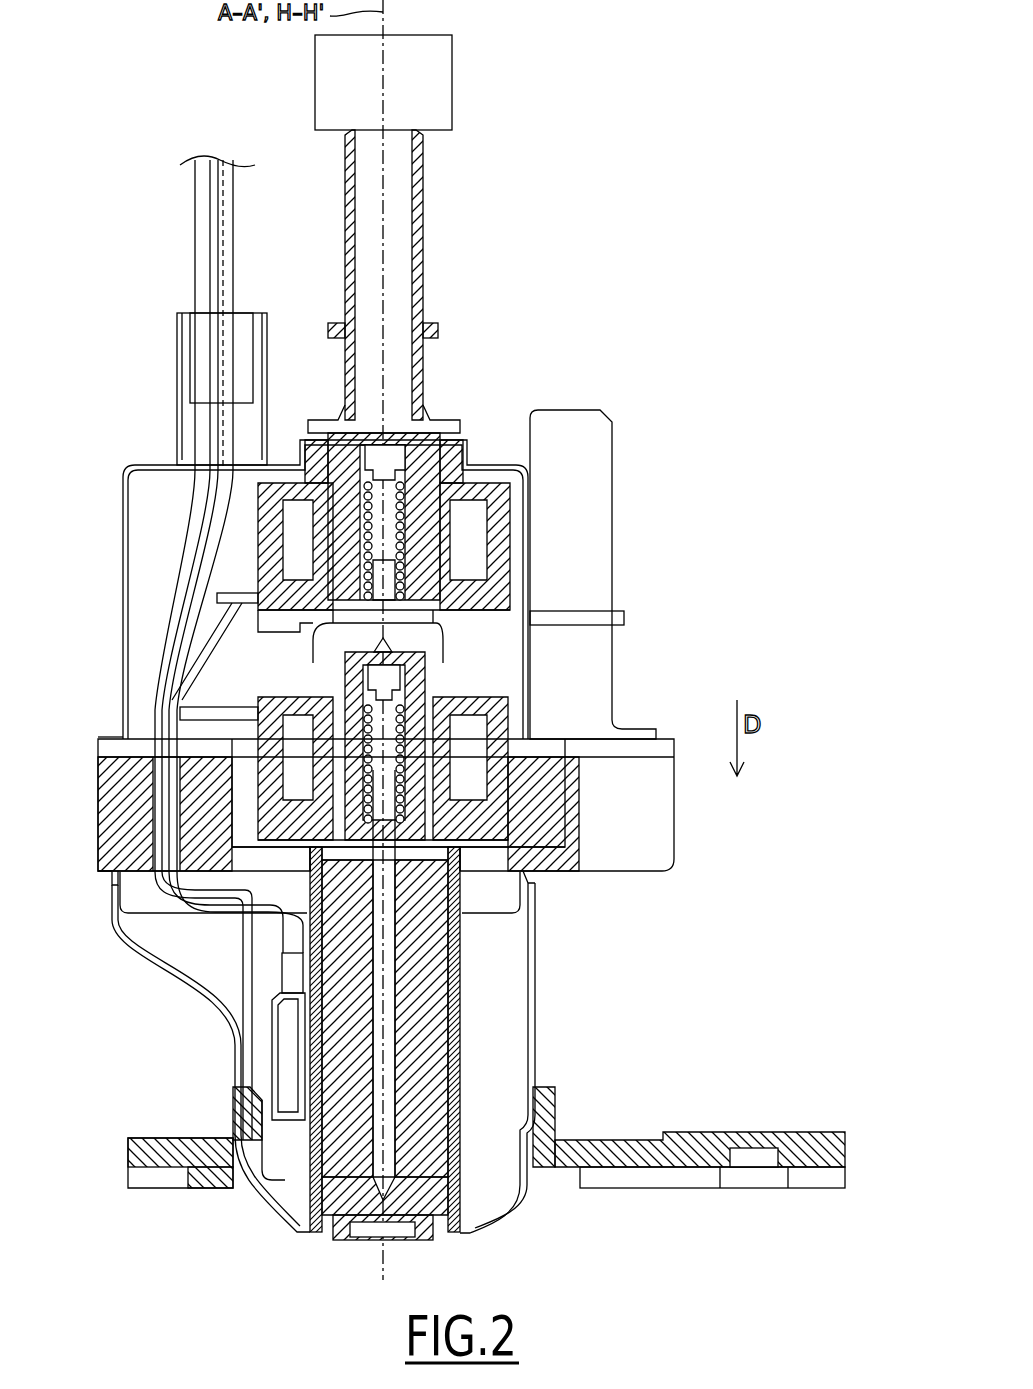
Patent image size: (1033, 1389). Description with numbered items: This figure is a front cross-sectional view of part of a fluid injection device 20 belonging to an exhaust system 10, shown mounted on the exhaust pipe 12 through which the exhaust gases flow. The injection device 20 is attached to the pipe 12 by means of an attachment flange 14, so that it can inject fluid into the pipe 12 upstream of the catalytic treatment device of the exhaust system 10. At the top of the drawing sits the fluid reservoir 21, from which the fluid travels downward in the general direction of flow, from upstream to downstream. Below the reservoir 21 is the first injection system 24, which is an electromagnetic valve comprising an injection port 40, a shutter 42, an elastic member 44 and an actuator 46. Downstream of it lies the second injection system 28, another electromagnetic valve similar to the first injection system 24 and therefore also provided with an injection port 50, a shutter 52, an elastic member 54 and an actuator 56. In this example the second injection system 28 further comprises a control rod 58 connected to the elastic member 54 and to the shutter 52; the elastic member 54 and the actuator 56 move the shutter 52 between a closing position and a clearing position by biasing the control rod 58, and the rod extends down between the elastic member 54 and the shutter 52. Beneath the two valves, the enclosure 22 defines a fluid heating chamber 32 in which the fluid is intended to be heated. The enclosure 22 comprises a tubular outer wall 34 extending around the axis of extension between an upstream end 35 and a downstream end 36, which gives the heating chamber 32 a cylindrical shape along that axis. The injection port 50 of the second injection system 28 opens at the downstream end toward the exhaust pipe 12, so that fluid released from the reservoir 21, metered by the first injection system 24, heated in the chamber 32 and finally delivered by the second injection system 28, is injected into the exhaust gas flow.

The exhaust system 10 is at (679, 283).
The exhaust pipe 12 is at (690, 1153).
The attachment flange 14 is at (578, 1140).
The fluid injection device 20 is at (497, 443).
The fluid reservoir 21 is at (453, 97).
The enclosure 22 is at (475, 1027).
The first injection system 24 is at (345, 430).
The second injection system 28 is at (442, 677).
The fluid heating chamber 32 is at (422, 962).
The tubular outer wall 34 is at (313, 1058).
The upstream end 35 is at (293, 875).
The downstream end 36 is at (301, 1173).
The injection port 40 is at (360, 644).
The shutter 42 is at (338, 584).
The elastic member 44 is at (358, 572).
The actuator 46 is at (484, 529).
The injection port 50 is at (401, 1245).
The shutter 52 is at (340, 1207).
The elastic member 54 is at (365, 735).
The actuator 56 is at (288, 776).
The control rod 58 is at (310, 975).